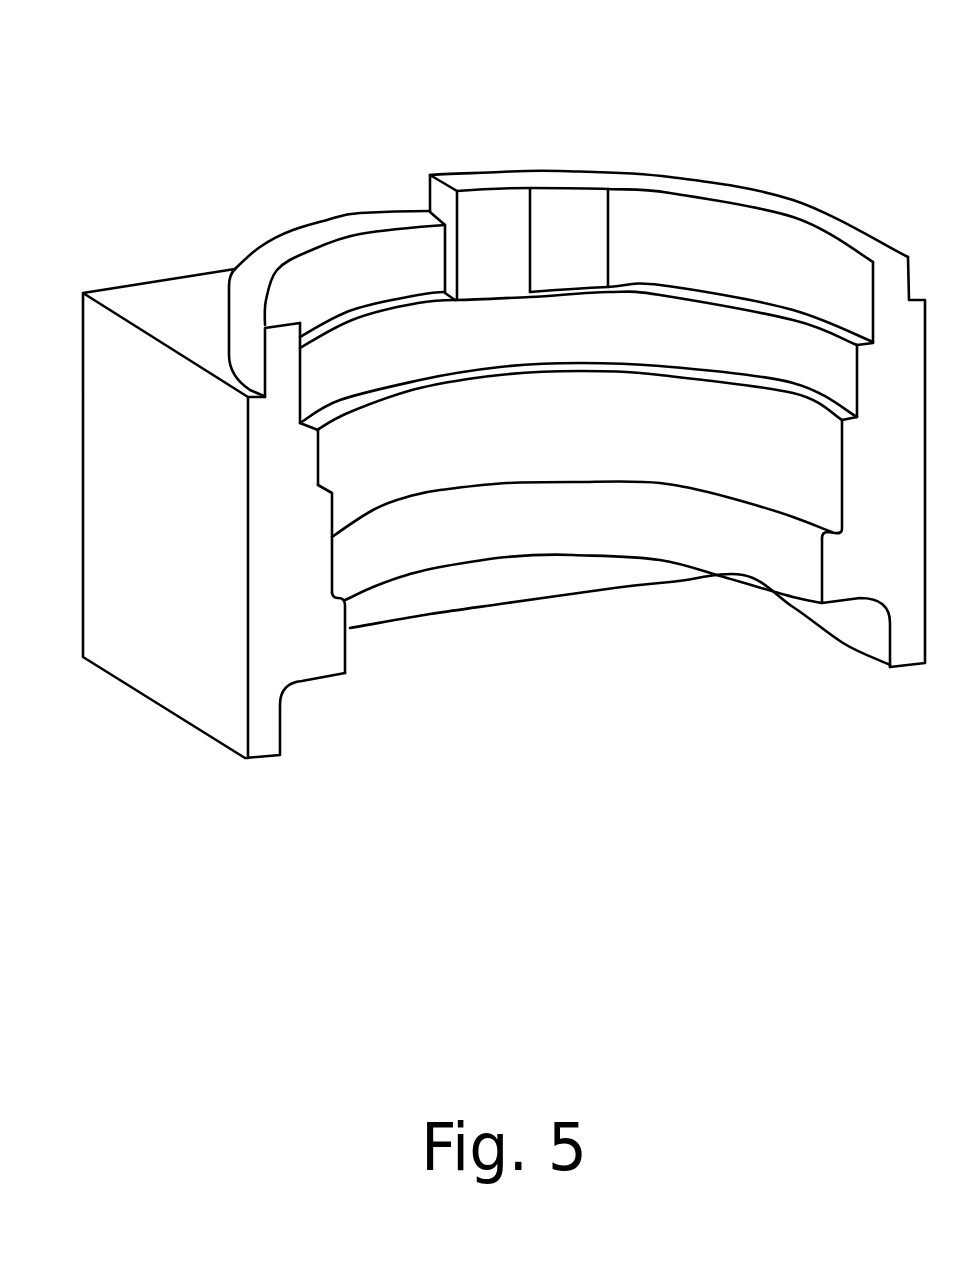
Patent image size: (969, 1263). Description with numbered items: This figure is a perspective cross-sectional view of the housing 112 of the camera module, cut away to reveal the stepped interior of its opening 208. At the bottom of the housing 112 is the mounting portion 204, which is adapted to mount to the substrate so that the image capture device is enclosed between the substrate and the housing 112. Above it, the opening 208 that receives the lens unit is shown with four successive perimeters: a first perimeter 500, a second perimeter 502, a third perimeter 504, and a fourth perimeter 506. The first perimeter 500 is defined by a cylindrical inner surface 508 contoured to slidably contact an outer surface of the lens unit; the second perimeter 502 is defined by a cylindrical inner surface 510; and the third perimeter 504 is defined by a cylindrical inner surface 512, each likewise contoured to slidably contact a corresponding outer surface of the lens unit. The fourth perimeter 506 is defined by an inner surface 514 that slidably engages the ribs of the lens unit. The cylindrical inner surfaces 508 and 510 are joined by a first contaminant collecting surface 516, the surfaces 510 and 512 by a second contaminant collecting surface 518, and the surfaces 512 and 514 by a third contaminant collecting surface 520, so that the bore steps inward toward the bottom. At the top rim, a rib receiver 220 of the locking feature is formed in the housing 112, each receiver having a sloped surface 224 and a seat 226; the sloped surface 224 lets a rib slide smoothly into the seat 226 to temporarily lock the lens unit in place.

The housing 112 is at (802, 140).
The mounting portion 204 is at (255, 763).
The opening 208 is at (355, 200).
The rib receivers 220 is at (462, 170).
The sloped surface 224 is at (587, 193).
The seat 226 is at (488, 192).
The first perimeter 500 is at (823, 570).
The second perimeter 502 is at (842, 485).
The third perimeter 504 is at (862, 383).
The fourth perimeter 506 is at (878, 285).
The cylindrical inner surface 508 is at (738, 548).
The cylindrical inner surface 510 is at (737, 467).
The cylindrical inner surface 512 is at (737, 353).
The inner surface 514 is at (735, 275).
The first contaminant collecting surface 516 is at (340, 604).
The second contaminant collecting surface 518 is at (322, 502).
The third contaminant collecting surface 520 is at (298, 427).